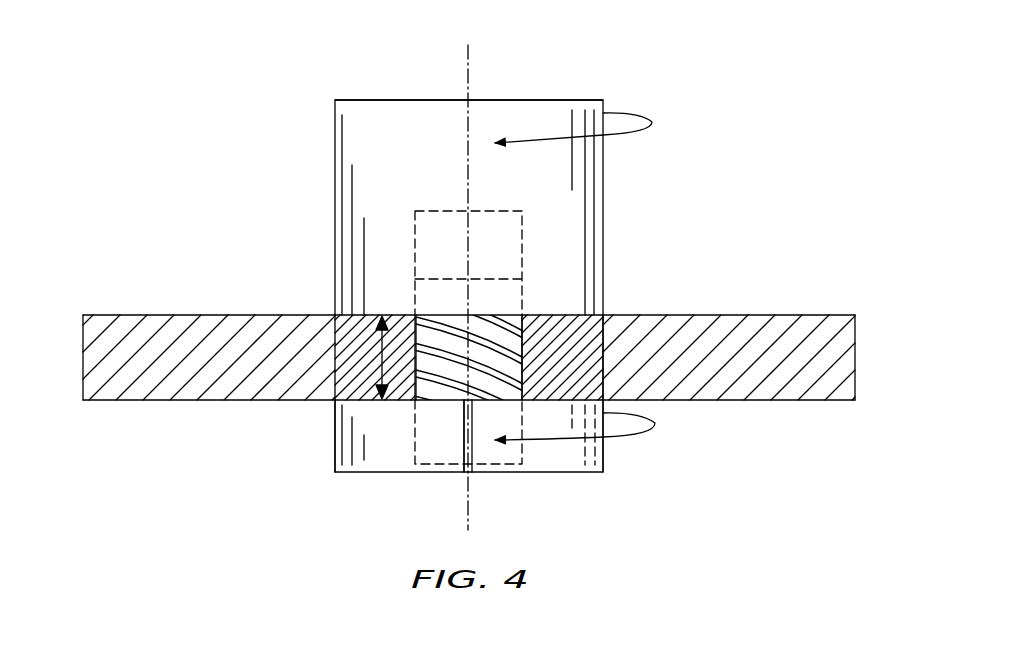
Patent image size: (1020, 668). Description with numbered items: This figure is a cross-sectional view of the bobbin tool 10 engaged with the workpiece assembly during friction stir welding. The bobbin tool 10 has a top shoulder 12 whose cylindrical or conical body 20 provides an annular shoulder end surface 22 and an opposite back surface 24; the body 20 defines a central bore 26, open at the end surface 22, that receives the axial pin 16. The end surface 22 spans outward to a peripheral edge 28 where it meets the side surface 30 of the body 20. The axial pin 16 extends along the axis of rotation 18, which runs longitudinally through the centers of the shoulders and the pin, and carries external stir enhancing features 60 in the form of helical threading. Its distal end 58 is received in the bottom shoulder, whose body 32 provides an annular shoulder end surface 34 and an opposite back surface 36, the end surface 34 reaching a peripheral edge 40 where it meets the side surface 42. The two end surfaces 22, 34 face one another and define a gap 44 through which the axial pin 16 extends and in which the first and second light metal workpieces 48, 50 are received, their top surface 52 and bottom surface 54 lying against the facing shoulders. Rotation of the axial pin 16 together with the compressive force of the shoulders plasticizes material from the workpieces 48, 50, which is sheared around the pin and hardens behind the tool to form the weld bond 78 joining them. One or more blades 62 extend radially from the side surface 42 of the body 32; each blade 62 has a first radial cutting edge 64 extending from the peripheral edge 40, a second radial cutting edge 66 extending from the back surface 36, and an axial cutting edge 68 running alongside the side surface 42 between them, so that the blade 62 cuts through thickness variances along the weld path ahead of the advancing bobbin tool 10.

The bobbin tool 10 is at (702, 191).
The top shoulder 12 is at (610, 177).
The axial pin 16 is at (522, 347).
The axis of rotation 18 is at (470, 60).
The body 20 is at (603, 210).
The annular shoulder end surface 22 is at (340, 328).
The back surface 24 is at (558, 100).
The central bore 26 is at (424, 240).
The peripheral edge 28 is at (608, 326).
The side surface 30 is at (603, 250).
The body 32 is at (373, 457).
The annular shoulder end surface 34 is at (358, 398).
The back surface 36 is at (557, 473).
The peripheral edge 40 is at (604, 399).
The side surface 42 is at (336, 458).
The gap 44 is at (382, 357).
The first light metal workpiece 48 is at (92, 377).
The second light metal workpiece 50 is at (838, 373).
The top surface 52 is at (767, 315).
The bottom surface 54 is at (772, 400).
The distal end 58 is at (497, 466).
The external stir enhancing features 60 is at (498, 328).
The blade 62 is at (472, 453).
The first radial cutting edge 64 is at (455, 382).
The second radial cutting edge 66 is at (466, 478).
The axial cutting edge 68 is at (463, 435).
The weld bond 78 is at (585, 378).